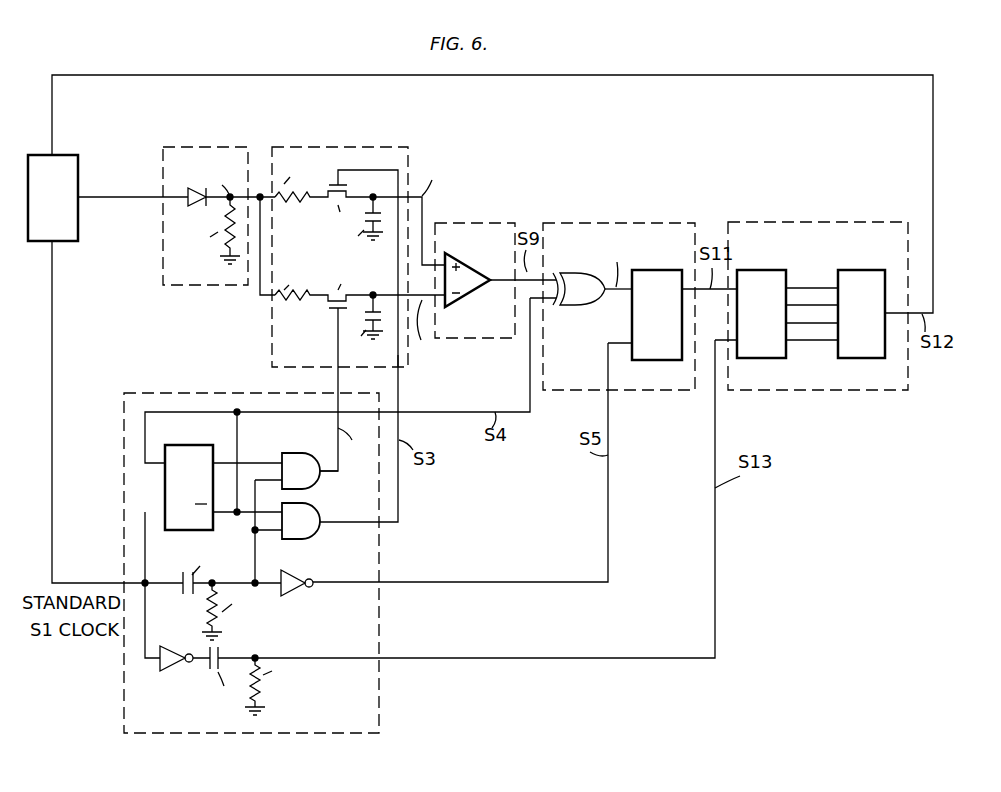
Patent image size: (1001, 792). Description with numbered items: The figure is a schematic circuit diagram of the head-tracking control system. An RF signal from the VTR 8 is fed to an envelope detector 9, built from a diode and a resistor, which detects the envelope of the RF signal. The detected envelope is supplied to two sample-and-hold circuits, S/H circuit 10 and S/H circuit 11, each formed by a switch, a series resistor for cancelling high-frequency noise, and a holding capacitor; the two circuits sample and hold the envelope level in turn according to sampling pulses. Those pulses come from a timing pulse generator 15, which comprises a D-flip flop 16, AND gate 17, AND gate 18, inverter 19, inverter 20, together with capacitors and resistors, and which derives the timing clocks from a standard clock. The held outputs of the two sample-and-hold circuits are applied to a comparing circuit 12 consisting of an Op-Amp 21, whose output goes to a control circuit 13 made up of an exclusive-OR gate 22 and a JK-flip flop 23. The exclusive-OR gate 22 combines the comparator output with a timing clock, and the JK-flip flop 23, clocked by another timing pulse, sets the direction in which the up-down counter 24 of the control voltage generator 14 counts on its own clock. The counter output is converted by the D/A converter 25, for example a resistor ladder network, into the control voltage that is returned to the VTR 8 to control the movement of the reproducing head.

The VTR 8 is at (68, 157).
The envelope detector 9 is at (232, 152).
The S/H circuit 10 is at (388, 152).
The S/H circuit 11 is at (412, 362).
The comparing circuit 12 is at (488, 263).
The control circuit 13 is at (520, 382).
The control voltage generator 14 is at (583, 418).
The timing pulse generator 15 is at (248, 547).
The D-flip flop 16 is at (200, 446).
The AND gate 17 is at (304, 452).
The AND gate 18 is at (318, 506).
The inverter 19 is at (175, 672).
The inverter 20 is at (300, 574).
The Op-Amp 21 is at (460, 262).
The exclusive-OR gate 22 is at (582, 272).
The JK-flip flop 23 is at (665, 270).
The up-down counter 24 is at (770, 270).
The D/A converter 25 is at (865, 270).